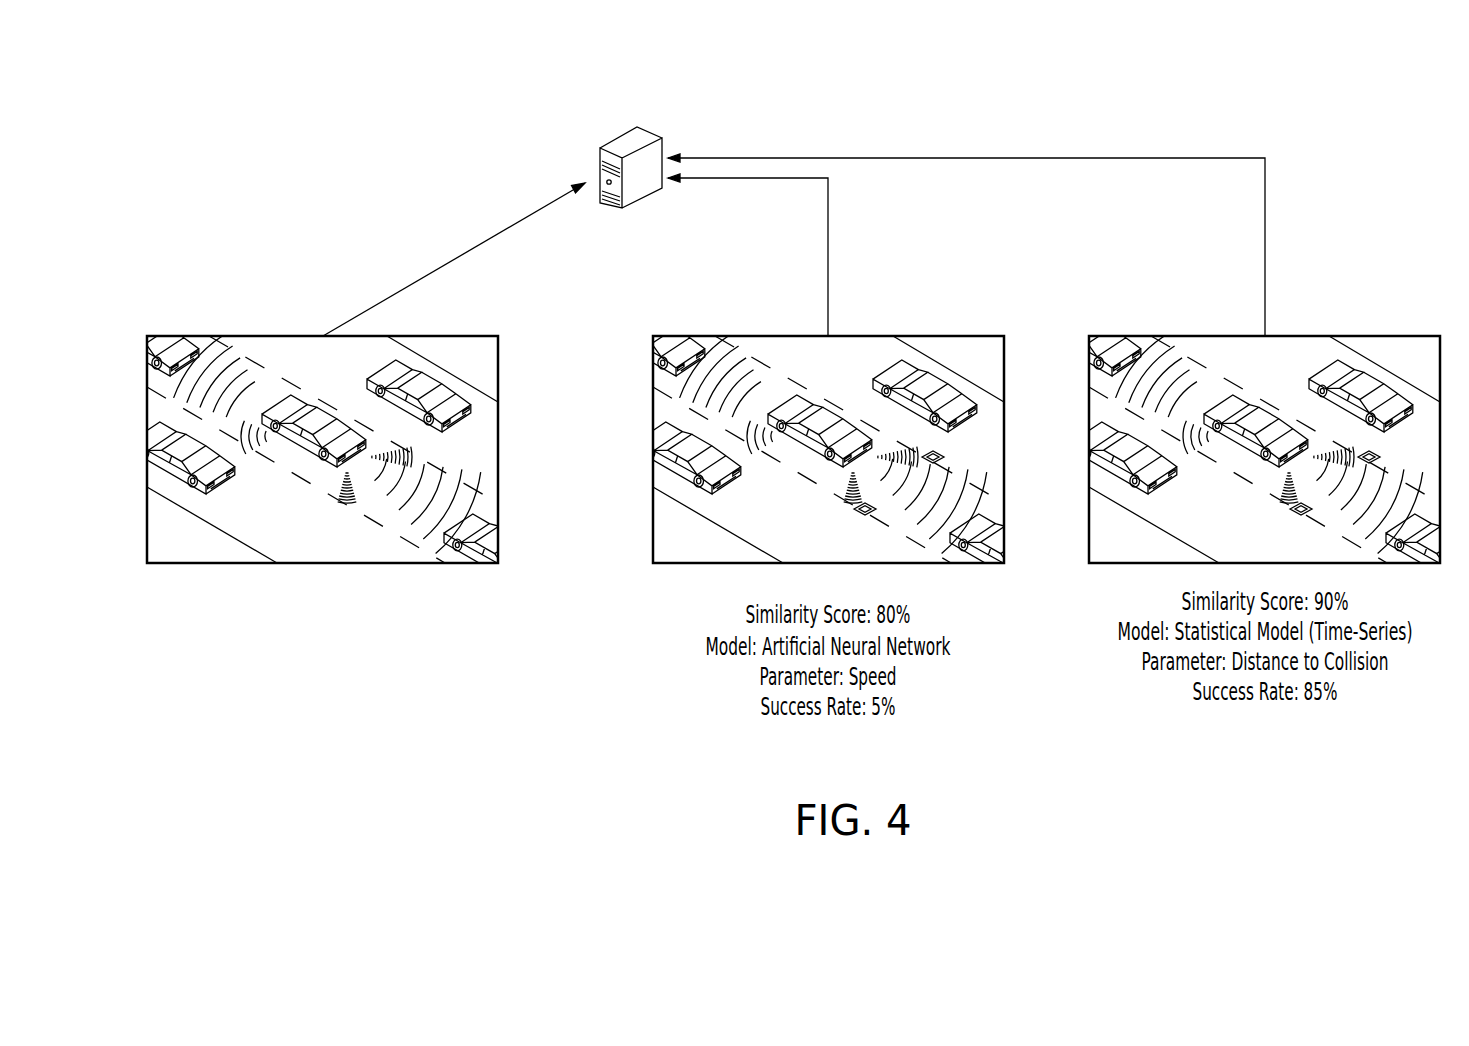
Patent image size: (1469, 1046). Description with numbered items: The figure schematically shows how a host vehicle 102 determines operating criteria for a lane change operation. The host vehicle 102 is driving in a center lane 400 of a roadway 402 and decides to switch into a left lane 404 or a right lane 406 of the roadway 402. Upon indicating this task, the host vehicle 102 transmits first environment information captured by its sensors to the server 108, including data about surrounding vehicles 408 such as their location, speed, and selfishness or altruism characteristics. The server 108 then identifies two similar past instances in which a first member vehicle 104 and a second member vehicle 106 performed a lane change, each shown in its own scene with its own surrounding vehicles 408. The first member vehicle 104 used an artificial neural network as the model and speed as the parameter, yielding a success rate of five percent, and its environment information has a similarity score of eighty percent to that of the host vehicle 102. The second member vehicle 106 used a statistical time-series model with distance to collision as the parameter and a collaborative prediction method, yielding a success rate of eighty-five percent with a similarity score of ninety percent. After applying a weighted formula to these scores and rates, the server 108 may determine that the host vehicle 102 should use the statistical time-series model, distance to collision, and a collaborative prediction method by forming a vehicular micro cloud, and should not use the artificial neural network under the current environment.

The host vehicle 102 is at (327, 443).
The first member vehicle 104 is at (833, 443).
The second member vehicle 106 is at (1269, 443).
The server 108 is at (641, 133).
The center lane 400 is at (322, 426).
The roadway 402 is at (267, 457).
The left lane 404 is at (270, 550).
The right lane 406 is at (388, 419).
The vehicles 408 is at (774, 447).